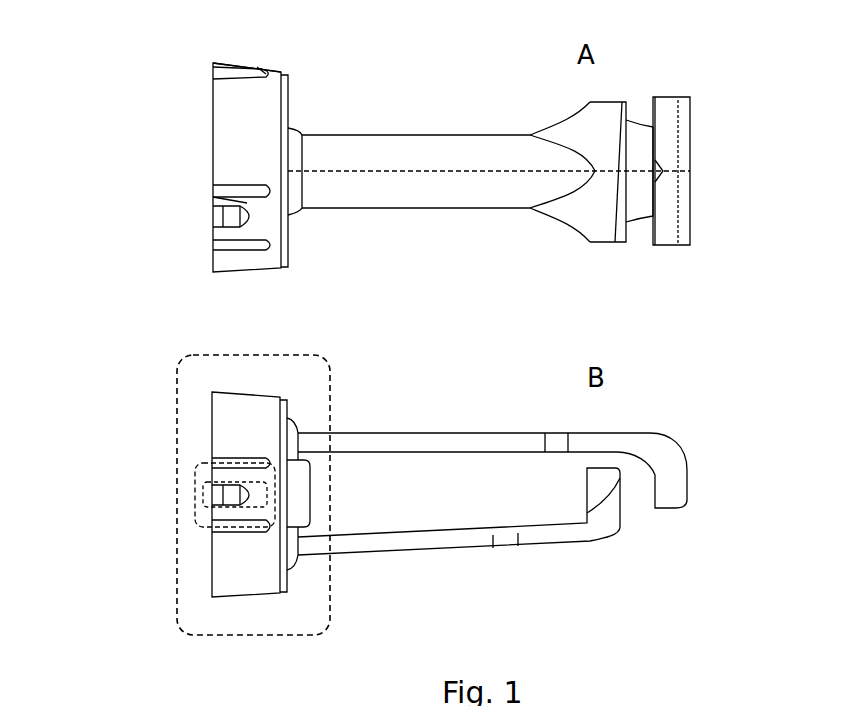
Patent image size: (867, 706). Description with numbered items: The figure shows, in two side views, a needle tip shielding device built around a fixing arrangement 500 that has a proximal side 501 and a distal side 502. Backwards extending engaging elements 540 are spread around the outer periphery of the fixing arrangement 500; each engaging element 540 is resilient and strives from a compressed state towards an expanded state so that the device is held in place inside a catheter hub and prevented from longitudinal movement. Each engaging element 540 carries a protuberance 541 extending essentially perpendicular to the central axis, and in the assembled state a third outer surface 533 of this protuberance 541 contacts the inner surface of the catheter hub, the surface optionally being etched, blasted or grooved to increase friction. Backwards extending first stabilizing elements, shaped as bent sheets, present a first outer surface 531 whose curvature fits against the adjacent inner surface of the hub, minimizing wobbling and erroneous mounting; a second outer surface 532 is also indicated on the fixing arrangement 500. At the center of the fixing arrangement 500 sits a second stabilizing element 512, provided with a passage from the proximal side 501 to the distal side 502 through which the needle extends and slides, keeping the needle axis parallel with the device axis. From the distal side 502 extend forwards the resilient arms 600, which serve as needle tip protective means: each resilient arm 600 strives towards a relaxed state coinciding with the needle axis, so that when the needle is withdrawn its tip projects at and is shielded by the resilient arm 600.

In FIG. 1B, the fixing arrangement 500 is at (175, 397).
In FIG. 1A, the proximal side 501 is at (210, 103).
In FIG. 1A, the distal side 502 is at (292, 102).
In FIG. 1B, the second stabilizing element 512 is at (302, 493).
In FIG. 1A, the first outer surface 531 is at (240, 146).
In FIG. 1A, the second outer surface 532 is at (243, 207).
In FIG. 1A, the third outer surface 533 is at (220, 222).
In FIG. 1B, the engaging element 540 is at (194, 473).
In FIG. 1B, the protuberance 541 is at (198, 490).
In FIG. 1A, the resilient arm 600 is at (489, 146).
In FIG. 1B, the resilient arm 600 is at (452, 431).